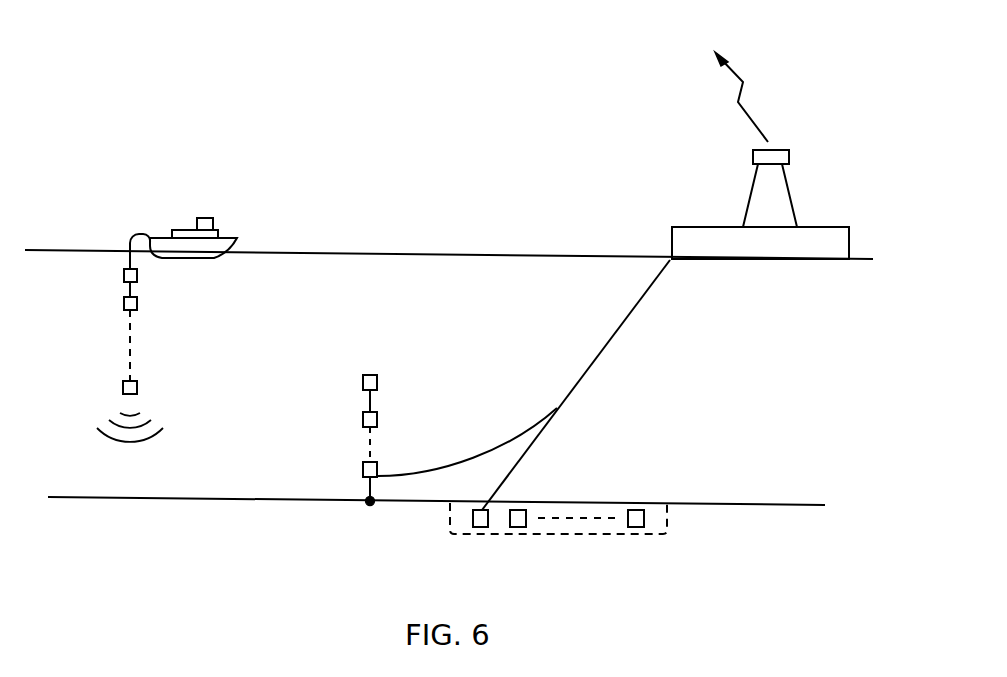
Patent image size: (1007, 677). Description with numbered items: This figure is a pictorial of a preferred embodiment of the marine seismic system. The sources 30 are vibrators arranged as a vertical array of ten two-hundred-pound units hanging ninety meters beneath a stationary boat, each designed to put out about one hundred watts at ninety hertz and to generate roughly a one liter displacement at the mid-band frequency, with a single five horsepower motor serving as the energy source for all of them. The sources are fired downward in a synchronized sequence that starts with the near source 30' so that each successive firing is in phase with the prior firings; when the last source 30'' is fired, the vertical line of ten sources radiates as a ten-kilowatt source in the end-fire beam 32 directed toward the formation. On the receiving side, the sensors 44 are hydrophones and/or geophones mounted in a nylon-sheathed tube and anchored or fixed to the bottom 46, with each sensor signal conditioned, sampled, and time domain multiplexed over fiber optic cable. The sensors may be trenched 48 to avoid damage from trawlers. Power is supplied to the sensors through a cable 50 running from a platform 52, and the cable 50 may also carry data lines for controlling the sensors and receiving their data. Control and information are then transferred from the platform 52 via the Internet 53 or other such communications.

The sources 30 is at (106, 314).
The near source 30' is at (172, 288).
The last source 30'' is at (170, 397).
The end-fire beam 32 is at (126, 446).
The sensors 44 is at (410, 370).
The bottom 46 is at (730, 505).
The trench 48 is at (555, 518).
The cable 50 is at (621, 326).
The platform 52 is at (707, 227).
The Internet 53 is at (723, 41).